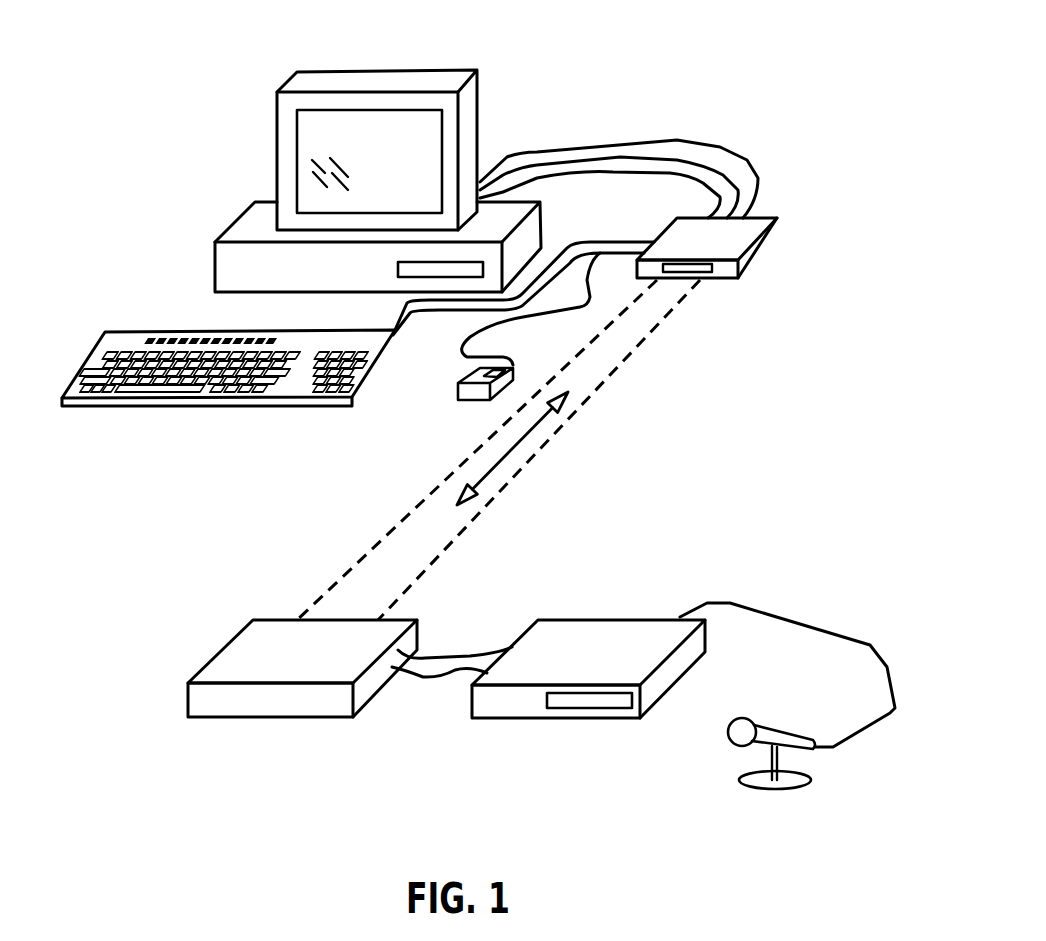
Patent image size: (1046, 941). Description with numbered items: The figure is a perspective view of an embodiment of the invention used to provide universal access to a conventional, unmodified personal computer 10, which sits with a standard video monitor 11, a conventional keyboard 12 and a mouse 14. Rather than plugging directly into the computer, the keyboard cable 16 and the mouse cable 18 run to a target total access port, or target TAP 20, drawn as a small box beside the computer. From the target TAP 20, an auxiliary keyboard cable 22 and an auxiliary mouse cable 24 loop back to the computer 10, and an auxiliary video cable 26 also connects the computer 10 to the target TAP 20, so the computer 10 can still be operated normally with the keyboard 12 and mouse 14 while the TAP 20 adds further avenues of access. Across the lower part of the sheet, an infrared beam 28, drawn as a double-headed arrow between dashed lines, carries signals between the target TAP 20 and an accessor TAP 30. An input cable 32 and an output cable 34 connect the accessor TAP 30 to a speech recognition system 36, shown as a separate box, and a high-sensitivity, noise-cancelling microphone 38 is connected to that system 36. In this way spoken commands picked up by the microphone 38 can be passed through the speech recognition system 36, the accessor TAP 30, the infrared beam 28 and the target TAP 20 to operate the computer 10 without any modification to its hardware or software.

The personal computer 10 is at (238, 218).
The video monitor 11 is at (338, 78).
The keyboard 12 is at (100, 342).
The mouse 14 is at (458, 405).
The keyboard cable 16 is at (403, 312).
The mouse cable 18 is at (463, 352).
The target total access port (TAP) 20 is at (750, 265).
The auxiliary keyboard cable 22 is at (578, 175).
The auxiliary mouse cable 24 is at (635, 158).
The auxiliary video cable 26 is at (700, 142).
The infrared beam 28 is at (518, 467).
The accessor TAP 30 is at (218, 653).
The input cable 32 is at (490, 652).
The output cable 34 is at (430, 677).
The speech recognition system 36 is at (630, 620).
The microphone 38 is at (730, 743).